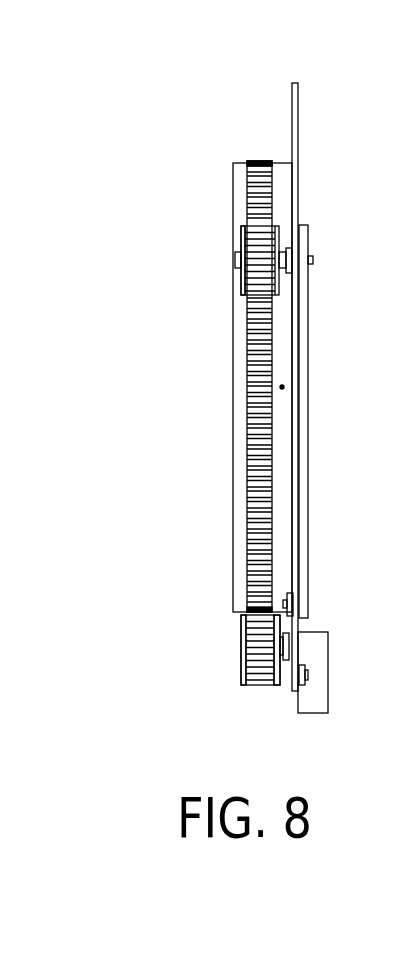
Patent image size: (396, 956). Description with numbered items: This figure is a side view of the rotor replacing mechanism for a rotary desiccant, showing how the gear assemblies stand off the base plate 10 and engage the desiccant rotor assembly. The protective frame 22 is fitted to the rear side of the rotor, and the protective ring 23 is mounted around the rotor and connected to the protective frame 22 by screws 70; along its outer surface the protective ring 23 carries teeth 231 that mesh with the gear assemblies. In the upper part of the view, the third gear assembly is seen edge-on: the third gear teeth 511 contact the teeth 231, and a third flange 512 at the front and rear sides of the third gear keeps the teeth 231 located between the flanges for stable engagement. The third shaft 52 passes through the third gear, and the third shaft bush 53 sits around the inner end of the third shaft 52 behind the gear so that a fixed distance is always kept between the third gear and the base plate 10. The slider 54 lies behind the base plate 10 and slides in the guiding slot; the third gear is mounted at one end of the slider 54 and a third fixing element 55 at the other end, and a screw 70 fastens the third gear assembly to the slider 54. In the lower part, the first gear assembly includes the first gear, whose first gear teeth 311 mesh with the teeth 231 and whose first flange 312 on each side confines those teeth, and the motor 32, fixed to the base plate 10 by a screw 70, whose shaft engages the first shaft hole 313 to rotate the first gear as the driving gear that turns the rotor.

The base plate 10 is at (298, 110).
The protective frame 22 is at (283, 203).
The protective ring 23 is at (247, 451).
The teeth 231 is at (259, 163).
The third shaft 52 is at (235, 262).
The third gear teeth 511 is at (262, 268).
The third flange 512 is at (245, 238).
The third shaft bush 53 is at (291, 268).
The slider 54 is at (304, 488).
The third fixing element 55 is at (289, 596).
The screw 70 is at (313, 260).
The motor 32 is at (316, 643).
The first gear teeth 311 is at (252, 645).
The first flange 312 is at (244, 627).
The first shaft hole 313 is at (273, 664).